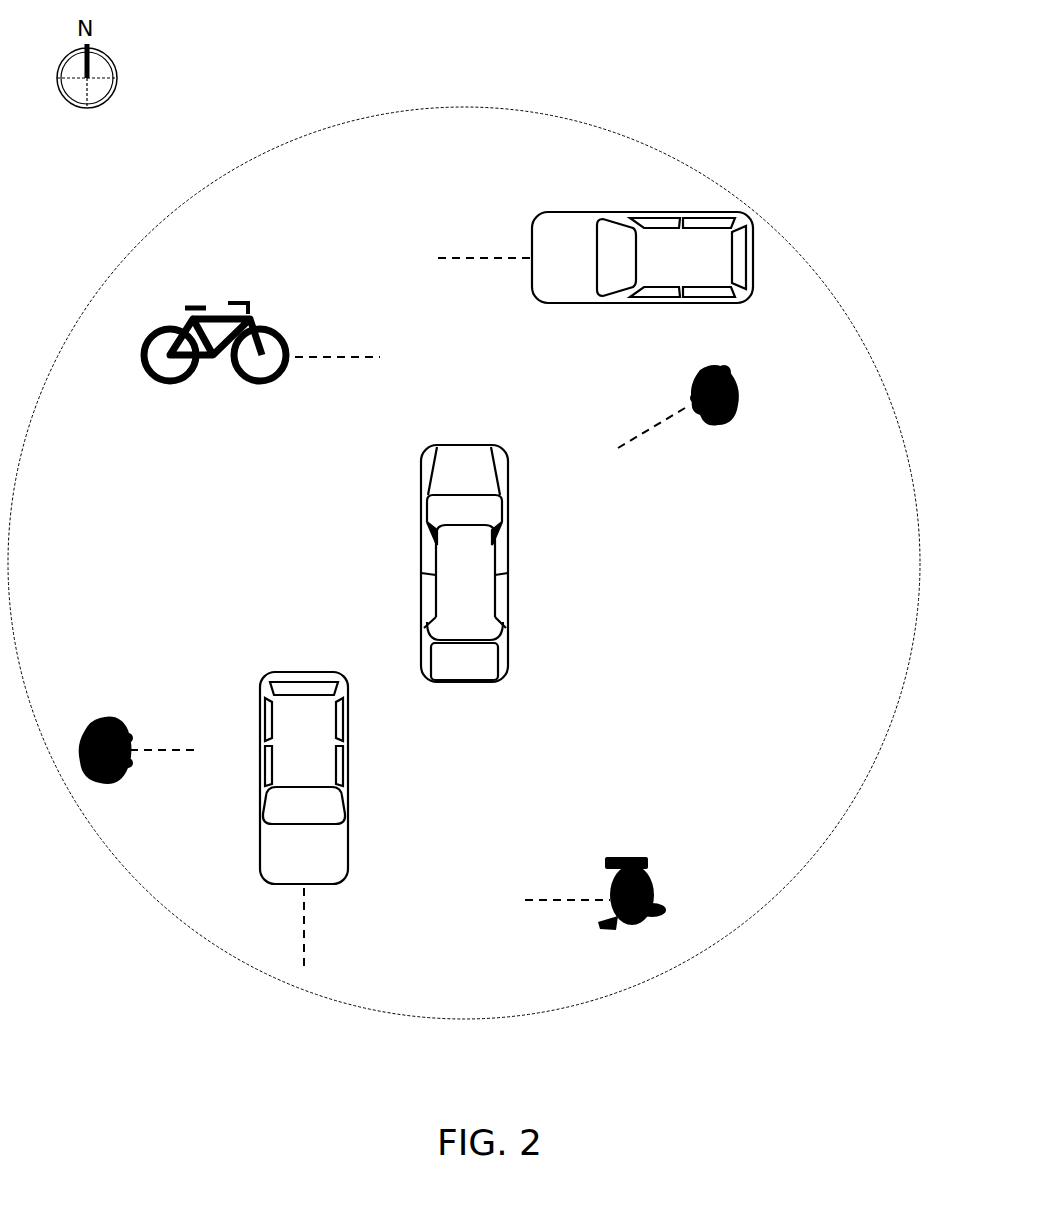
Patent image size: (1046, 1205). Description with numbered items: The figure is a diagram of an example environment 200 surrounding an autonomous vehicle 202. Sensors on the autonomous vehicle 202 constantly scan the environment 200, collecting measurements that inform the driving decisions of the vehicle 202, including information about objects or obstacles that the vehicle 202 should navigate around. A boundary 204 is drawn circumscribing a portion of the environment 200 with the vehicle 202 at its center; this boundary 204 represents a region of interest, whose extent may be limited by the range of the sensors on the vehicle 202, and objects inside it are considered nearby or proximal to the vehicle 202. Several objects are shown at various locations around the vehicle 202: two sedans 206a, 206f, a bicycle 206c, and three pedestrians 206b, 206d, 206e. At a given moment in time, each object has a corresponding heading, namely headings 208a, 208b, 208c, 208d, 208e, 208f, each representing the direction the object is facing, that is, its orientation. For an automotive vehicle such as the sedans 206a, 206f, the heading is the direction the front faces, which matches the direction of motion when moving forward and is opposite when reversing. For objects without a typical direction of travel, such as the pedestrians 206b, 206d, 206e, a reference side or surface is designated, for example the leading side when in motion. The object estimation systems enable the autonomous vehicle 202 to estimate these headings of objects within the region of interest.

The environment 200 is at (737, 79).
The autonomous vehicle 202 is at (421, 478).
The boundary 204 is at (118, 262).
The sedan 206a is at (535, 219).
The pedestrian 206b is at (693, 369).
The bicycle 206c is at (142, 345).
The pedestrian 206d is at (97, 720).
The pedestrian 206e is at (600, 878).
The sedan 206f is at (262, 684).
The heading 208a is at (468, 262).
The heading 208b is at (635, 441).
The heading 208c is at (364, 357).
The heading 208d is at (166, 718).
The heading 208e is at (545, 902).
The heading 208f is at (304, 937).